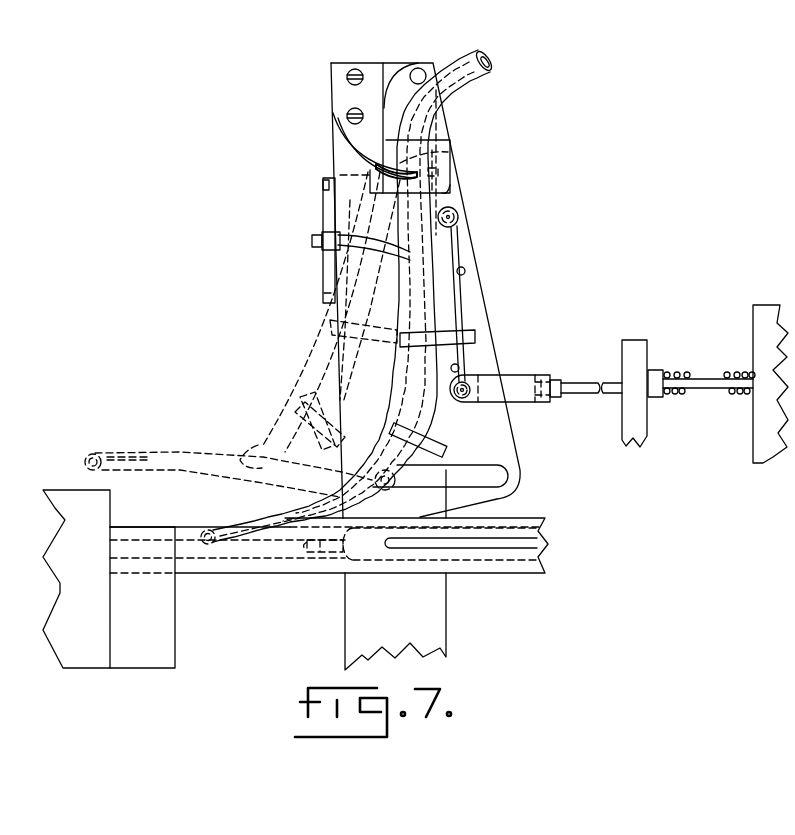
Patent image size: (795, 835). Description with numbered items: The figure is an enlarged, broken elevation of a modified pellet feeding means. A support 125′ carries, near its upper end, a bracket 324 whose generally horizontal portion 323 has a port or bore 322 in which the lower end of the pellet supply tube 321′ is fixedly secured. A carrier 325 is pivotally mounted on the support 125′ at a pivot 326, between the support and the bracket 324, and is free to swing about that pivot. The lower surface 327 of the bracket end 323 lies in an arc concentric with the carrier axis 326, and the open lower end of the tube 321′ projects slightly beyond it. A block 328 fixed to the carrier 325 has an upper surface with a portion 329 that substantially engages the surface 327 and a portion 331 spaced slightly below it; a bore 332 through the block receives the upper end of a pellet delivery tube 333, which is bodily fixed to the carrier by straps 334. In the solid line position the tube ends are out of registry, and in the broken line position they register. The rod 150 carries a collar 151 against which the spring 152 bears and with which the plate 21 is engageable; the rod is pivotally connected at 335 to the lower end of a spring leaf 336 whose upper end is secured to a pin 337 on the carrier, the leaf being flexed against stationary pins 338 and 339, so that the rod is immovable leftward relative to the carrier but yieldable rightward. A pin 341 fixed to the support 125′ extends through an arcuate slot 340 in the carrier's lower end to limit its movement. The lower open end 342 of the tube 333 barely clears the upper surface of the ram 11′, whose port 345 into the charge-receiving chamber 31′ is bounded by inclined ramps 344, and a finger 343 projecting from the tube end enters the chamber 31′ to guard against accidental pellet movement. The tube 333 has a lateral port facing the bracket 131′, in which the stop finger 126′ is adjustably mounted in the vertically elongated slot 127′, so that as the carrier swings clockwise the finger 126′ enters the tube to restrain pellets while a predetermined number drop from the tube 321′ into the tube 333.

The ram 11′ is at (278, 575).
The plate 21 is at (636, 340).
The charge-receiving chamber 31′ is at (303, 556).
The support 125′ is at (447, 600).
The stop finger 126′ is at (372, 248).
The vertically elongated slot 127′ is at (323, 188).
The bracket 131′ is at (328, 285).
The rod 150 is at (580, 380).
The collar 151 is at (656, 370).
The spring 152 is at (684, 372).
The pellet supply tube 321′ is at (489, 54).
The port or bore 322 is at (450, 153).
The generally horizontal portion of bracket 323 is at (440, 140).
The bracket 324 is at (333, 116).
The carrier 325 is at (470, 242).
The pivot 326 is at (418, 68).
The lower substantially horizontal surface 327 is at (355, 160).
The block 328 is at (452, 192).
The surface portion 329 is at (440, 172).
The surface portion 331 is at (382, 163).
The bore or opening 332 is at (445, 186).
The pellet delivery tube 333 is at (437, 295).
The straps 334 is at (476, 336).
The pivotal connection 335 is at (462, 398).
The spring leaf 336 is at (462, 306).
The pin 337 is at (458, 219).
The stationary pin 338 is at (466, 272).
The stationary pin 339 is at (460, 368).
The arcuate slot 340 is at (455, 476).
The pin 341 is at (378, 468).
The lower open end of tube 342 is at (195, 475).
The finger 343 is at (90, 452).
The inclined ramps 344 is at (200, 532).
The port 345 is at (250, 542).